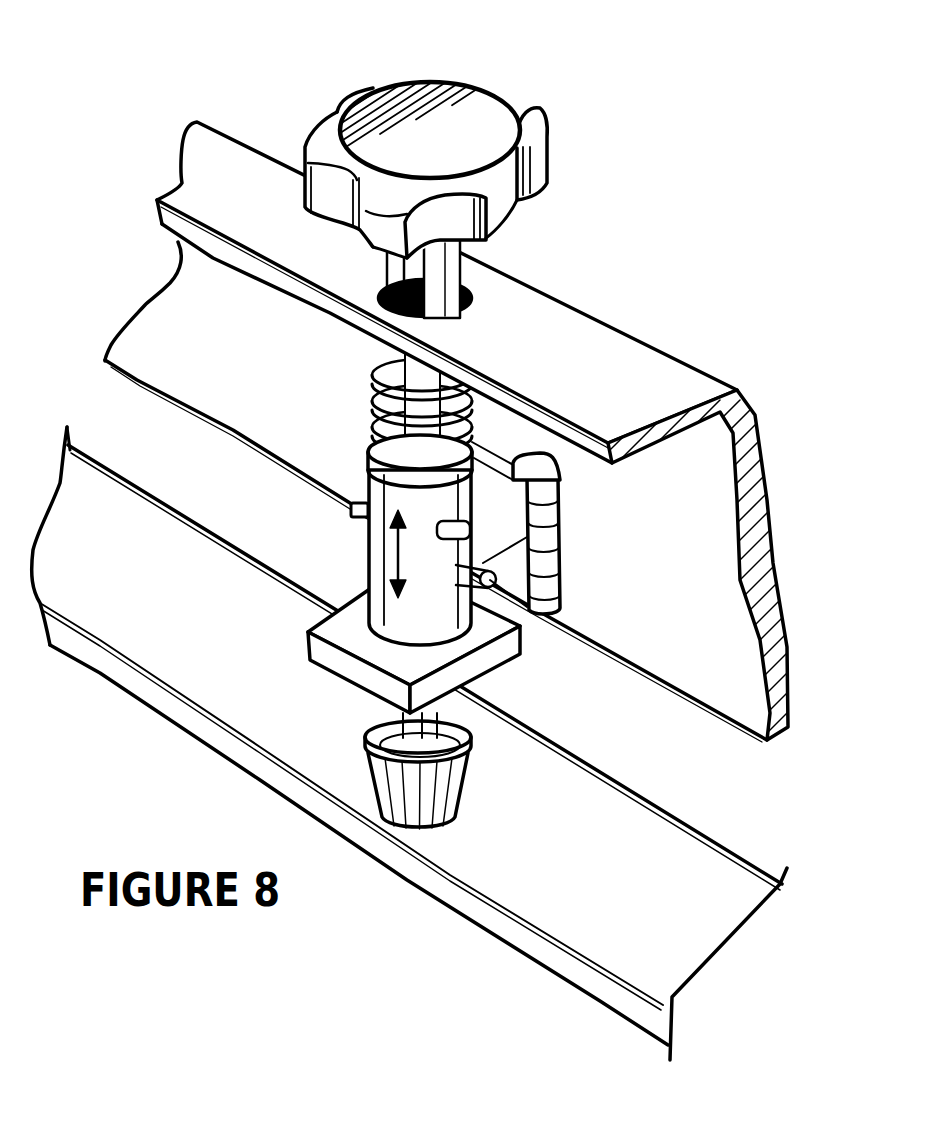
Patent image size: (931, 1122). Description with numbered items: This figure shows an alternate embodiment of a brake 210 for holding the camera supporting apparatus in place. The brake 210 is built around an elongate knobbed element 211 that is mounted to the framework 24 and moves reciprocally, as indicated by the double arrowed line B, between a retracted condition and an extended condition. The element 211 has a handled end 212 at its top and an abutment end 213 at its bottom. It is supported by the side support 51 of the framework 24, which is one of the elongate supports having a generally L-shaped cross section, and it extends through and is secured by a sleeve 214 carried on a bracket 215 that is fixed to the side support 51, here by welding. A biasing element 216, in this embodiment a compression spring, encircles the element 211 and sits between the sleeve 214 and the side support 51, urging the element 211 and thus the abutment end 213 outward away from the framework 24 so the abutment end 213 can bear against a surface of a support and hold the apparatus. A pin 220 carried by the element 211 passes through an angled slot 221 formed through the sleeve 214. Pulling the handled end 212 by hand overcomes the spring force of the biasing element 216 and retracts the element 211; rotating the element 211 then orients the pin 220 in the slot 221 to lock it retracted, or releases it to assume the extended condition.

The brake 210 is at (468, 96).
The handled end 212 is at (520, 140).
The knobbed/handled element 211 is at (452, 291).
The biasing element 216 is at (370, 444).
The sleeve 214 is at (371, 540).
The bracket 215 is at (493, 640).
The abutment end 213 is at (460, 788).
The pin 220 is at (557, 534).
The angled slot 221 is at (545, 458).
The framework 24 is at (518, 436).
The side support 51 is at (650, 373).
The double arrowed line B is at (405, 548).